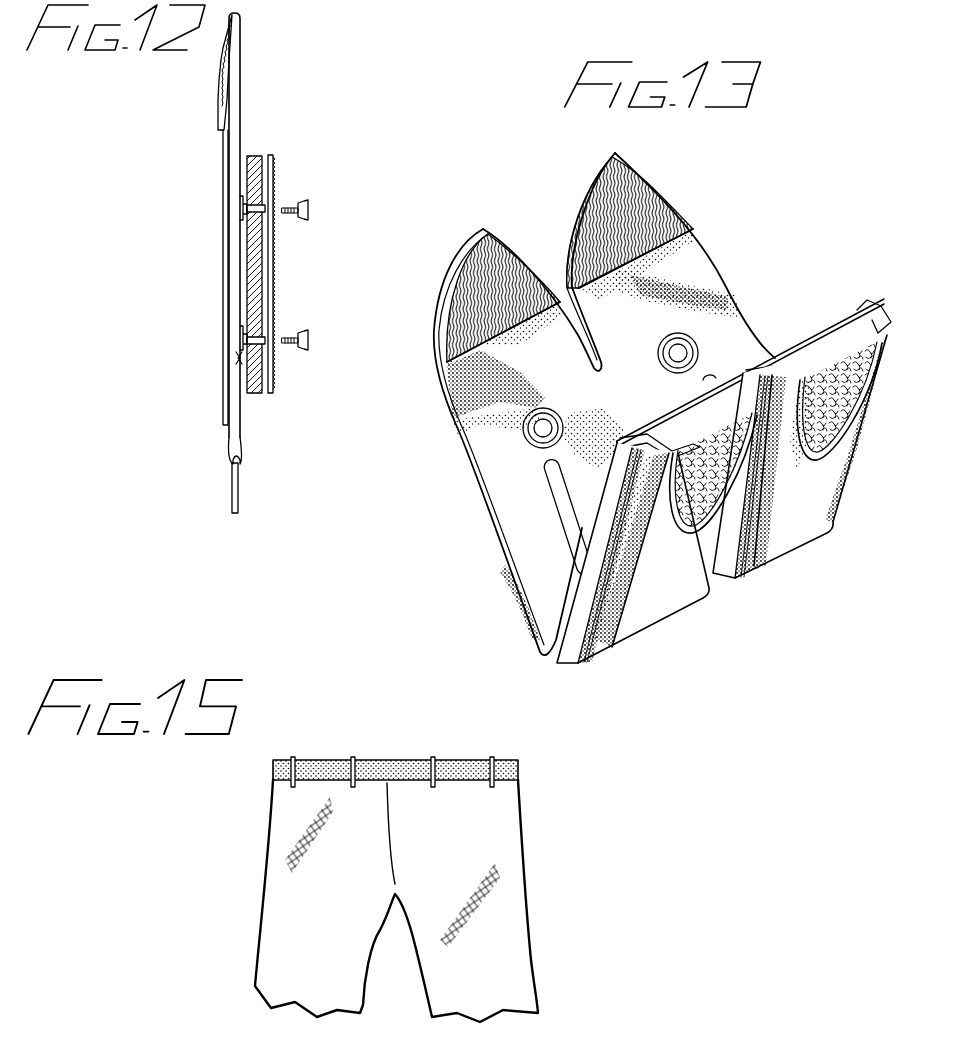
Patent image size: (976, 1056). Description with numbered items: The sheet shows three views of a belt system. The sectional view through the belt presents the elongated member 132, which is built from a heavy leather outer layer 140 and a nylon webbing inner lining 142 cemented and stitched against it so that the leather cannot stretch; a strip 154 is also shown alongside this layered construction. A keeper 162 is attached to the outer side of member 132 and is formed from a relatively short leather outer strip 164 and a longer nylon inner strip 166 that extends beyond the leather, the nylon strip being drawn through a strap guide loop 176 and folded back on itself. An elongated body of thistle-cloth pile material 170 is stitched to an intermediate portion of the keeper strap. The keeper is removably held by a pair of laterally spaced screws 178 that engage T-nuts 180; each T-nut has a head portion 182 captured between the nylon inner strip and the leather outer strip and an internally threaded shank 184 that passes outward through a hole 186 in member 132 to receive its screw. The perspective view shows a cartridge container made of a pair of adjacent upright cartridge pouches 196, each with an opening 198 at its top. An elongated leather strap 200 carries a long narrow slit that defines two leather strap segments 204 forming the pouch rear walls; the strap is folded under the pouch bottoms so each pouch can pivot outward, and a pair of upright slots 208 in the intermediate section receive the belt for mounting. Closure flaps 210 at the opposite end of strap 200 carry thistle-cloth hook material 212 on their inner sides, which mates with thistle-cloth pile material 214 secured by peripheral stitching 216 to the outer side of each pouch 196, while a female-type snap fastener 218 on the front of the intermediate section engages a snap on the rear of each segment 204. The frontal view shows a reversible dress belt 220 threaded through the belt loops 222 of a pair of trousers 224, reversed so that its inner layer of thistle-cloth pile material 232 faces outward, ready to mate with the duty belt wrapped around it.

In FIG. 12, the elongated member 132 is at (264, 410).
In FIG. 12, the outer layer 140 is at (255, 157).
In FIG. 12, the inner lining 142 is at (275, 262).
In FIG. 12, the fastener strip 154 is at (274, 228).
In FIG. 12, the keeper 162 is at (214, 152).
In FIG. 12, the outer strip 164 is at (229, 200).
In FIG. 12, the inner strip 166 is at (242, 97).
In FIG. 12, the thistle-cloth pile material 170 is at (226, 62).
In FIG. 12, the strap guide loop 176 is at (241, 487).
In FIG. 12, the screws 178 is at (310, 205).
In FIG. 12, the T-nuts 180 is at (233, 360).
In FIG. 12, the head portion 182 is at (220, 215).
In FIG. 12, the internally threaded shank 184 is at (235, 193).
In FIG. 12, the hole 186 is at (272, 240).
In FIG. 13, the cartridge pouches 196 is at (647, 627).
In FIG. 13, the opening 198 is at (685, 428).
In FIG. 13, the leather strap 200 is at (480, 483).
In FIG. 13, the leather strap segments 204 is at (647, 424).
In FIG. 13, the slots 208 is at (712, 376).
In FIG. 13, the closure flaps 210 is at (687, 257).
In FIG. 13, the thistle-cloth hook material 212 is at (500, 243).
In FIG. 13, the thistle-cloth pile material 214 is at (700, 513).
In FIG. 13, the peripheral stitching 216 is at (710, 593).
In FIG. 13, the female-type snap fastener 218 is at (678, 353).
In FIG. 15, the reversible dress belt 220 is at (313, 780).
In FIG. 15, the belt loops 222 is at (353, 758).
In FIG. 15, the trousers 224 is at (480, 808).
In FIG. 15, the thistle-cloth pile material 232 is at (475, 762).